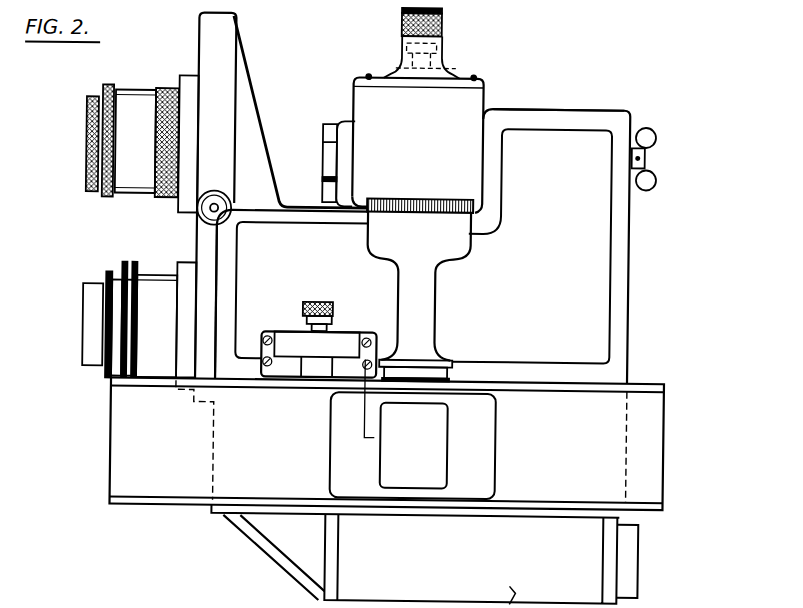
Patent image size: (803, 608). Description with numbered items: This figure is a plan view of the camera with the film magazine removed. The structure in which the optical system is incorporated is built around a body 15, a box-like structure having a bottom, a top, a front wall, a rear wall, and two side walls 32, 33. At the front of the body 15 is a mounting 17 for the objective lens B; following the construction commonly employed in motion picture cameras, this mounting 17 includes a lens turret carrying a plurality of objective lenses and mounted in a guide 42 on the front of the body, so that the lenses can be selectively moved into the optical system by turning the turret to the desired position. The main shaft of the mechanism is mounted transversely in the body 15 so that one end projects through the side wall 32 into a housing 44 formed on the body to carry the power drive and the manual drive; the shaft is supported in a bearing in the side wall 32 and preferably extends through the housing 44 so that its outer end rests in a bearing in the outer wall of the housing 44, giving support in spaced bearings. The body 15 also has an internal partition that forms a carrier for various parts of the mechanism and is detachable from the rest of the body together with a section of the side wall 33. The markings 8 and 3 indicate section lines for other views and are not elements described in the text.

The guide 42 is at (221, 67).
The housing 44 is at (368, 114).
The side wall 32 is at (561, 108).
The body 15 is at (605, 315).
The mounting 17 is at (184, 257).
The side wall 33 is at (225, 514).
The section line 8- 8 is at (66, 315).
The section line 3- 3 is at (66, 366).
The objective lens B is at (98, 371).